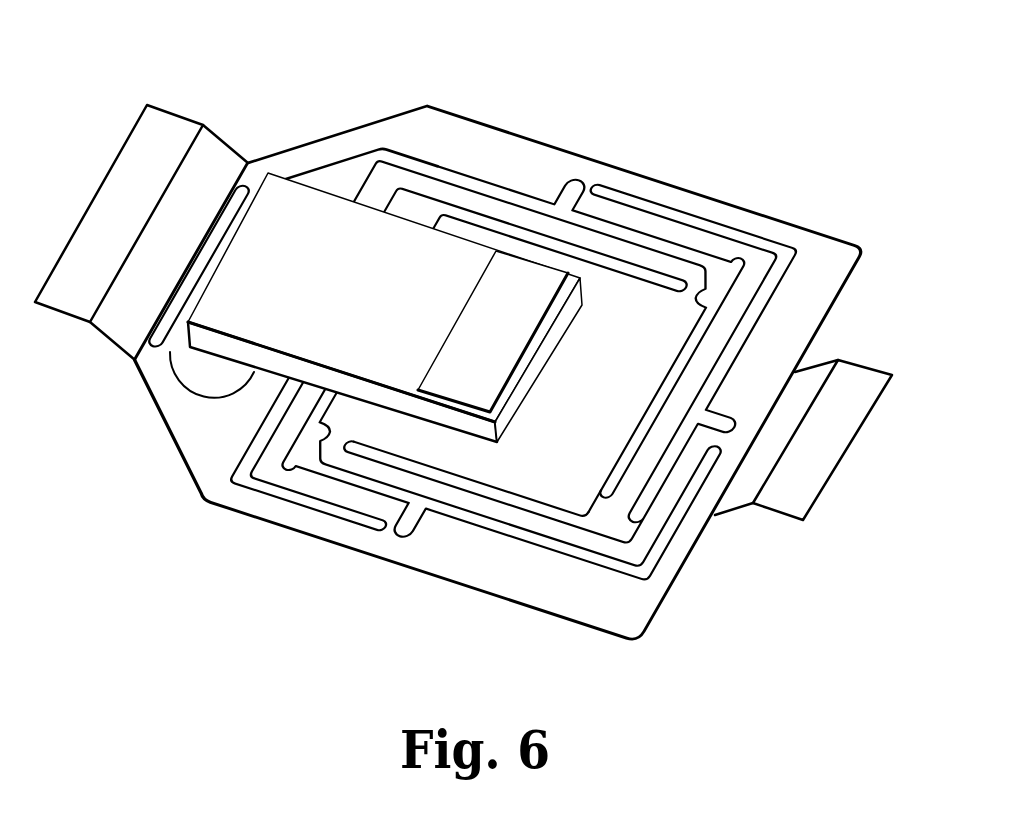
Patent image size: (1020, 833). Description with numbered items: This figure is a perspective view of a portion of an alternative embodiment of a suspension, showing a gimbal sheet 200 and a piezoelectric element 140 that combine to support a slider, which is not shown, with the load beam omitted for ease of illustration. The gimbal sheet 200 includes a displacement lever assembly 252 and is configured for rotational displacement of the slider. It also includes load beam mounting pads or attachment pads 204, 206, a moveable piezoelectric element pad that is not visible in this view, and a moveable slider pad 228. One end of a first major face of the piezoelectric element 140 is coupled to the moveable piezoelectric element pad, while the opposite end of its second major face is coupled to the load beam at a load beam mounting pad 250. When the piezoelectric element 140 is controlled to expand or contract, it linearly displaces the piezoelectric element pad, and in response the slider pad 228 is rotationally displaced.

The gimbal sheet 200 is at (175, 98).
The displacement lever assembly 252 is at (368, 577).
The moveable slider pad 228 is at (634, 351).
The piezoelectric element 140 is at (307, 227).
The load beam mounting pad 250 is at (527, 287).
The load beam mounting pad or attachment pad 206 is at (102, 223).
The load beam mounting pad or attachment pad 204 is at (801, 485).